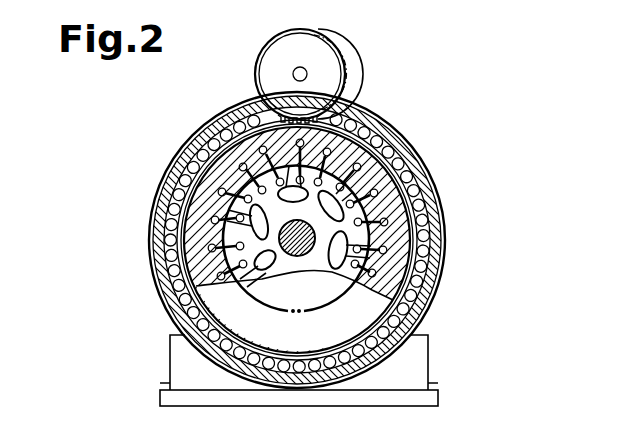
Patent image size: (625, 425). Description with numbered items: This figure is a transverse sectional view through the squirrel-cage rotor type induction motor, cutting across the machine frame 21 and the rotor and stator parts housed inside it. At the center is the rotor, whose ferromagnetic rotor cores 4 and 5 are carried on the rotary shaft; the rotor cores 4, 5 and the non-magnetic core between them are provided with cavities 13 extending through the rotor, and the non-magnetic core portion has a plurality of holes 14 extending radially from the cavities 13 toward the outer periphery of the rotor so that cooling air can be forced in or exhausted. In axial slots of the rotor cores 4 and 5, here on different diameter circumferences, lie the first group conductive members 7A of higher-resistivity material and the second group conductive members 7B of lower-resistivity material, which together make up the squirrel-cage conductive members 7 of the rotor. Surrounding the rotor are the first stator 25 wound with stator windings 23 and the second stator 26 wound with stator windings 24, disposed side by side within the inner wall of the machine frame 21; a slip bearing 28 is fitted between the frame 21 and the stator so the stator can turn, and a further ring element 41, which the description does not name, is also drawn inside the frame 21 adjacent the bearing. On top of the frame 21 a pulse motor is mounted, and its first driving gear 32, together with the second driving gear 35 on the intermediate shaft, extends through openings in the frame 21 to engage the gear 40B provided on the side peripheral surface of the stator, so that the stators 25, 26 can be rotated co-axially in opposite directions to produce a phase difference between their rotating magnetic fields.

The rotor core 4 is at (329, 242).
The rotor core 5 is at (424, 201).
The conductive members 7 is at (358, 240).
The first group conductive members 7A is at (400, 234).
The second group conductive members 7B is at (402, 263).
The cavities 13 is at (195, 300).
The holes 14 is at (212, 213).
The machine frame 21 is at (424, 172).
The stator windings 23 is at (235, 261).
The stator windings 24 is at (216, 250).
The first stator 25 is at (228, 204).
The second stator 26 is at (197, 240).
The slip bearing 28 is at (210, 142).
The first driving gear 32 is at (358, 73).
The second driving gear 35 is at (327, 65).
The gear 40B is at (262, 113).
The inner race 41 is at (176, 173).